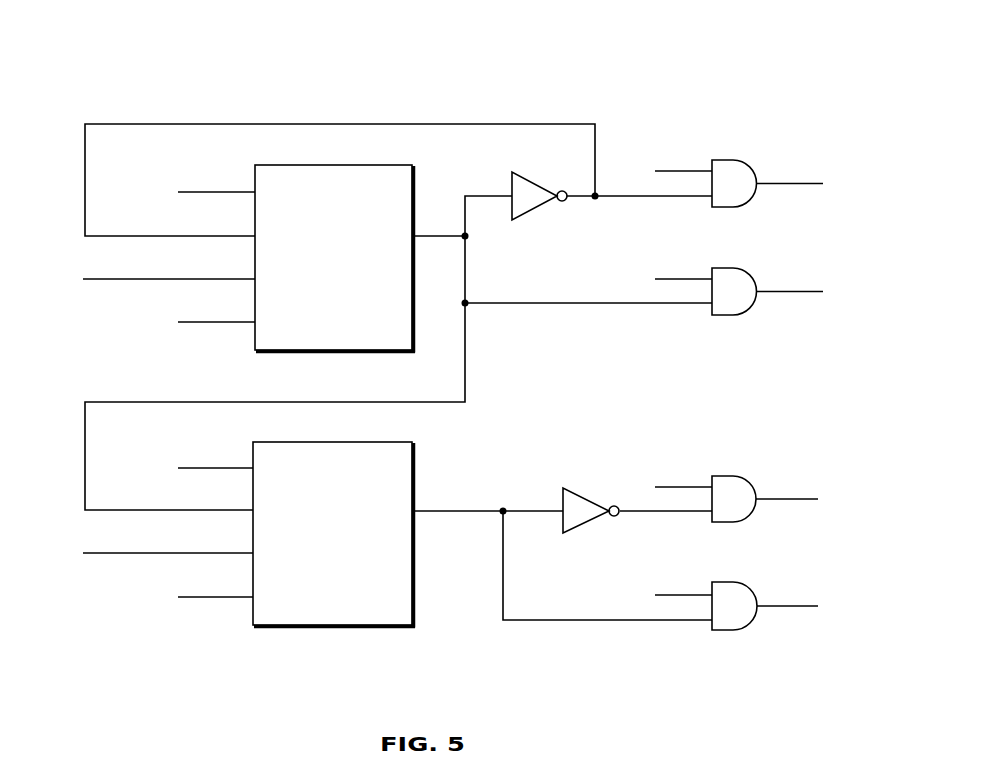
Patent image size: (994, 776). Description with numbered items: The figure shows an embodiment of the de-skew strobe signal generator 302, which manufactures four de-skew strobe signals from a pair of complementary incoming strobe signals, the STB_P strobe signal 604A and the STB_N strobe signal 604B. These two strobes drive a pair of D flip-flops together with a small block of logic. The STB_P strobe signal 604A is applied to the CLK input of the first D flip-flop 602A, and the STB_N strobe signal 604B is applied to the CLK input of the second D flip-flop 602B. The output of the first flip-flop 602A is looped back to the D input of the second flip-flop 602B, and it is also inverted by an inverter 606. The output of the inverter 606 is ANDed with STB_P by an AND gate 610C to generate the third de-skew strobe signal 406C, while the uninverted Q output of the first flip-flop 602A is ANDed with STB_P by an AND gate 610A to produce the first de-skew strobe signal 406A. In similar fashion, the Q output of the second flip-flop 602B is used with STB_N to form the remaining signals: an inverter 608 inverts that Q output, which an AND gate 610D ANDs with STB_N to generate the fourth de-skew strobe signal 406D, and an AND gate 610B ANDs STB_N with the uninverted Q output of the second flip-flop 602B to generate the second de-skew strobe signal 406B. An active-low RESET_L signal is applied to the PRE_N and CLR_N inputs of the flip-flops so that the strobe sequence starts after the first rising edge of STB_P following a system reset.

The de-skew strobe signal generator 302 is at (688, 70).
The D flip-flop 602A is at (305, 275).
The D flip-flop 602B is at (305, 552).
The STB_P strobe signal 604A is at (141, 289).
The STB_N strobe signal 604B is at (138, 564).
The inverter 606 is at (561, 214).
The inverter 608 is at (543, 498).
The AND gate 610A is at (768, 315).
The AND gate 610B is at (767, 630).
The AND gate 610C is at (763, 197).
The AND gate 610D is at (763, 514).
The S1 de-skew strobe signal 406A is at (808, 274).
The S2 de-skew strobe signal 406B is at (807, 591).
The S3 de-skew strobe signal 406C is at (808, 166).
The S4 de-skew strobe signal 406D is at (807, 483).